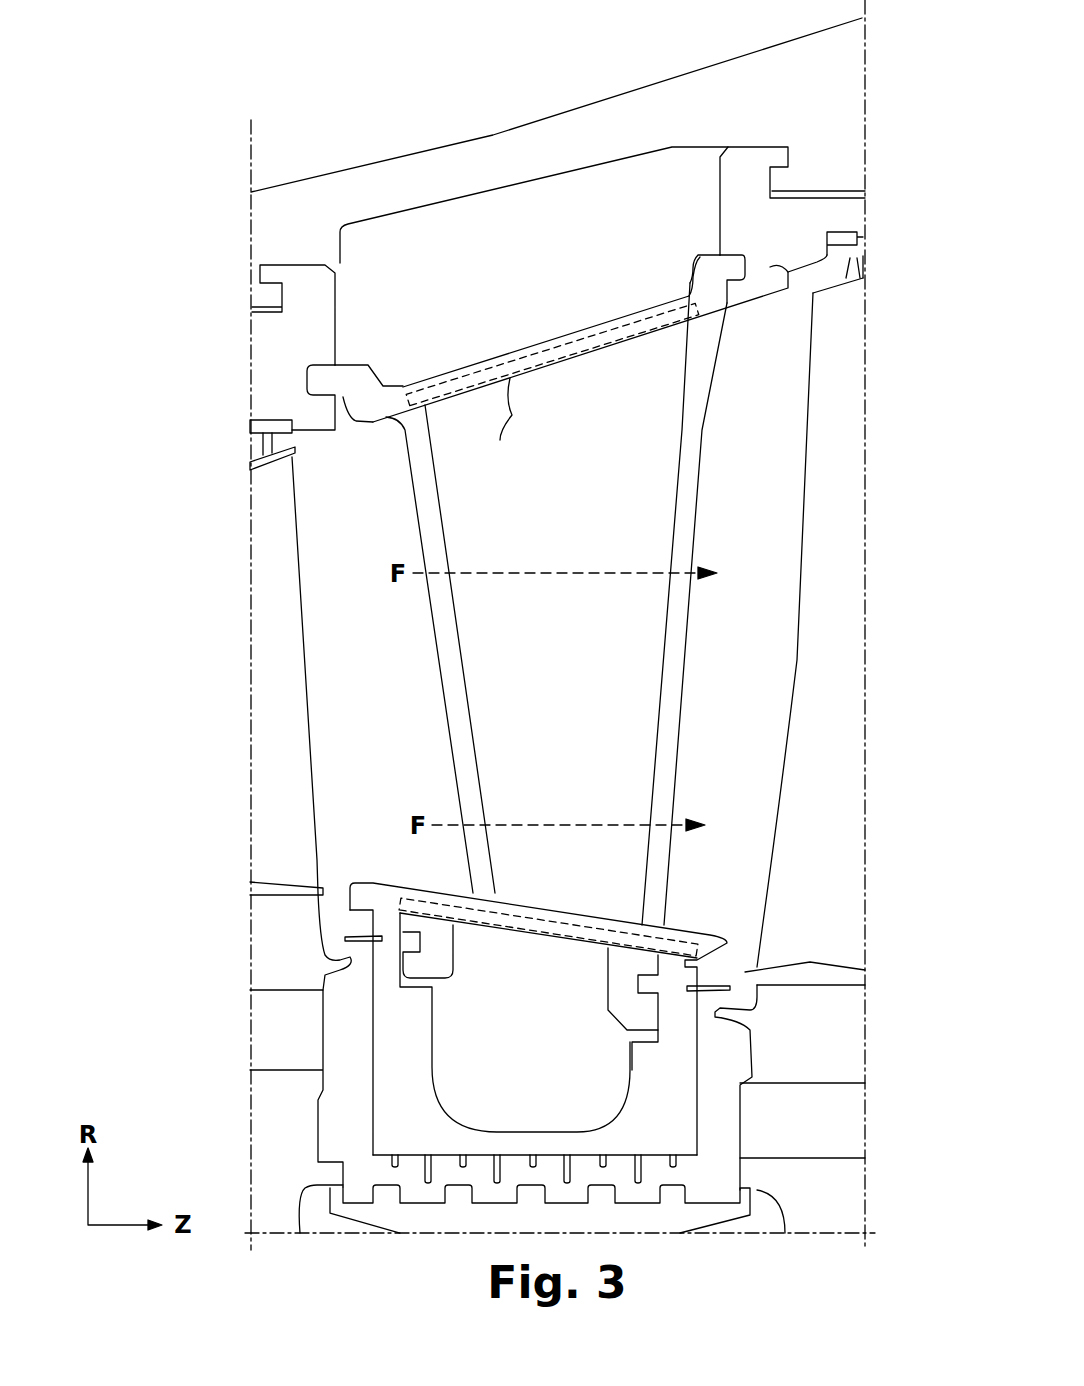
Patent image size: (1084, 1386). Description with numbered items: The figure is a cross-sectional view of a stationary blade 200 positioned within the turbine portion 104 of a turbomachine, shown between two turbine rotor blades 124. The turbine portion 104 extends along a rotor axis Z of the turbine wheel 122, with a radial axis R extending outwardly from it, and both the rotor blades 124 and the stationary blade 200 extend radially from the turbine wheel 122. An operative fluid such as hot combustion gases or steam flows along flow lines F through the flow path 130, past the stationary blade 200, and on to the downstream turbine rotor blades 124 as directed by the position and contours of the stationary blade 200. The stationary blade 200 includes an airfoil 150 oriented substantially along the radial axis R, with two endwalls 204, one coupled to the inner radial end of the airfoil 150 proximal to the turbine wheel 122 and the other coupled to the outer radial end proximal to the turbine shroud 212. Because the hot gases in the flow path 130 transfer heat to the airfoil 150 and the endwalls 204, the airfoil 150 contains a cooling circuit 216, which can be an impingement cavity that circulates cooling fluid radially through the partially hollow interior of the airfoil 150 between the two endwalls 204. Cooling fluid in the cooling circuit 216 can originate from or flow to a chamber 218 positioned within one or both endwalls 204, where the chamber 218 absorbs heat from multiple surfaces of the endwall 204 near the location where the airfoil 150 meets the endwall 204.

The turbine portion 104 is at (222, 515).
The turbine wheel 122 is at (255, 1180).
The turbine rotor blades 124 is at (277, 642).
The flow path 130 is at (361, 726).
The airfoil 150 is at (577, 604).
The stationary blade 200 is at (420, 516).
The endwalls 204 is at (500, 388).
The turbine shroud 212 is at (282, 403).
The cooling circuit 216 is at (663, 486).
The chamber 218 is at (642, 322).